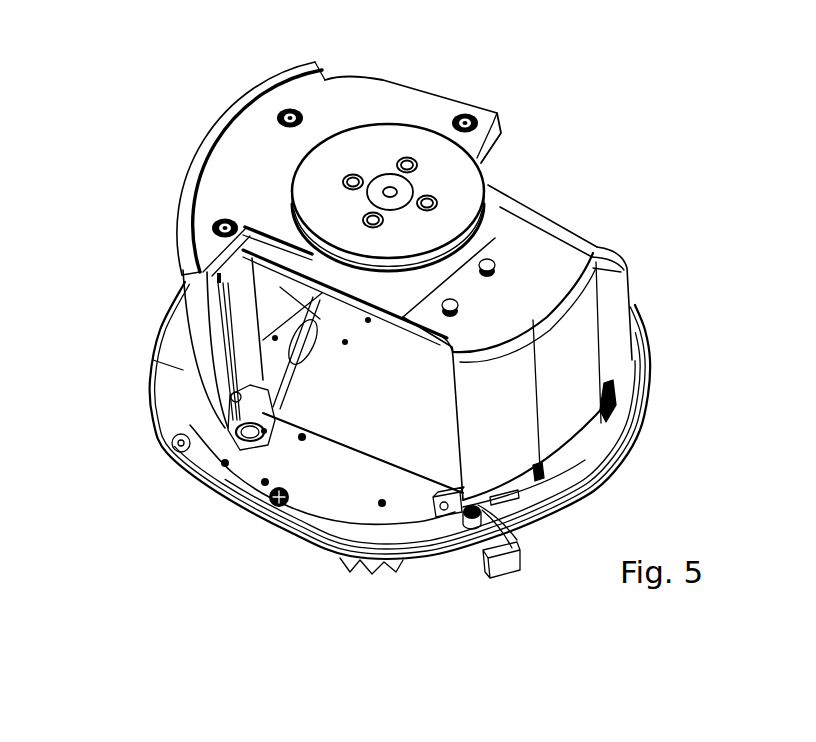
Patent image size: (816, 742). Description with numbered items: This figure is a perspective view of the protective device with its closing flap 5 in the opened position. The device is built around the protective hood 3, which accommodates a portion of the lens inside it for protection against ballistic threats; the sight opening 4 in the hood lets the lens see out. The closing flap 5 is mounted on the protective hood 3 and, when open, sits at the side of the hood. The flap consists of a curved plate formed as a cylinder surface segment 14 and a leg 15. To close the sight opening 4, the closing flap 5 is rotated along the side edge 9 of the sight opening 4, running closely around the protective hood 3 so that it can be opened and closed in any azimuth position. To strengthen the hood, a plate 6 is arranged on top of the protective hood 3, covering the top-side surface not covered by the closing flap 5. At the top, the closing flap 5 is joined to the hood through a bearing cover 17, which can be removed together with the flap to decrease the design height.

The protective hood 3 is at (573, 345).
The sight opening 4 is at (363, 397).
The closing flap 5 is at (195, 285).
The plate 6 is at (542, 255).
The side edge 9 is at (230, 307).
The cylinder surface segment 14 is at (192, 263).
The leg 15 is at (258, 152).
The bearing cover 17 is at (470, 193).